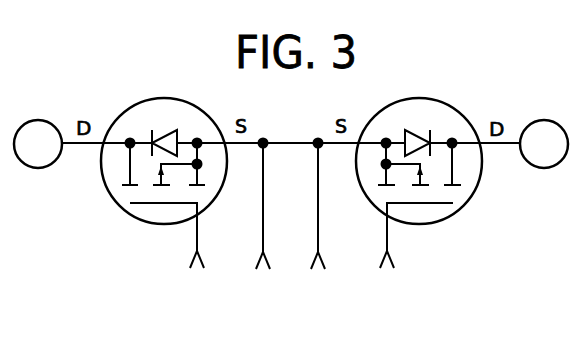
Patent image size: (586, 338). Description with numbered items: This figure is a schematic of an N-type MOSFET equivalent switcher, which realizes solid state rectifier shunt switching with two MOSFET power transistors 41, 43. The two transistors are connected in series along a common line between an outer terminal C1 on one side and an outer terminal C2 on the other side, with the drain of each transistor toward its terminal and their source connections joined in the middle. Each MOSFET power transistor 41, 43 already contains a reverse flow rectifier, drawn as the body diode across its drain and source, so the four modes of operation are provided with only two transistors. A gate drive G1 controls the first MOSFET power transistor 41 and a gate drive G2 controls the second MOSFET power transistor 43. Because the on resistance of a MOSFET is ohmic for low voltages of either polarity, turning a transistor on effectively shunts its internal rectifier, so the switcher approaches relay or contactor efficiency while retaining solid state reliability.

The MOSFET power transistor 41 is at (108, 190).
The MOSFET power transistor 43 is at (472, 196).
The first capacitor terminal C1 is at (57, 144).
The second capacitor terminal C2 is at (525, 144).
The gate drive input of Q1 G1 is at (176, 261).
The gate drive input of Q2 G2 is at (412, 261).